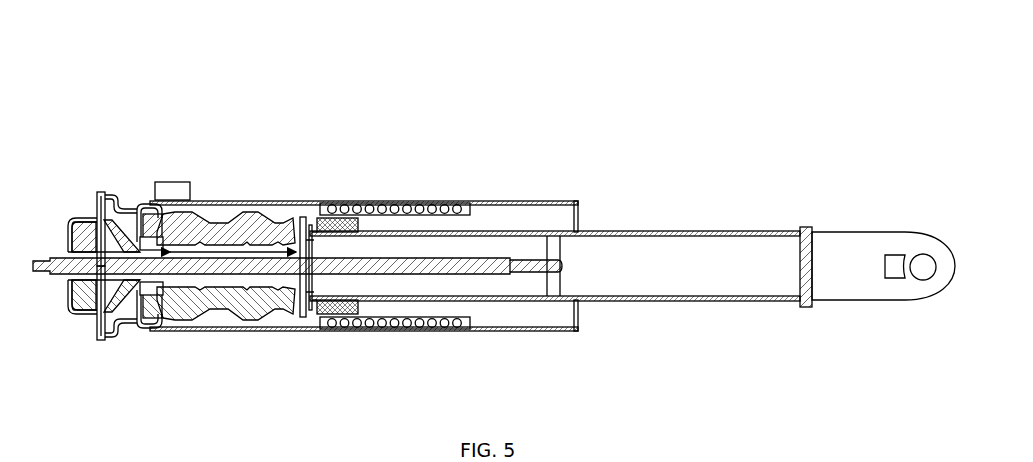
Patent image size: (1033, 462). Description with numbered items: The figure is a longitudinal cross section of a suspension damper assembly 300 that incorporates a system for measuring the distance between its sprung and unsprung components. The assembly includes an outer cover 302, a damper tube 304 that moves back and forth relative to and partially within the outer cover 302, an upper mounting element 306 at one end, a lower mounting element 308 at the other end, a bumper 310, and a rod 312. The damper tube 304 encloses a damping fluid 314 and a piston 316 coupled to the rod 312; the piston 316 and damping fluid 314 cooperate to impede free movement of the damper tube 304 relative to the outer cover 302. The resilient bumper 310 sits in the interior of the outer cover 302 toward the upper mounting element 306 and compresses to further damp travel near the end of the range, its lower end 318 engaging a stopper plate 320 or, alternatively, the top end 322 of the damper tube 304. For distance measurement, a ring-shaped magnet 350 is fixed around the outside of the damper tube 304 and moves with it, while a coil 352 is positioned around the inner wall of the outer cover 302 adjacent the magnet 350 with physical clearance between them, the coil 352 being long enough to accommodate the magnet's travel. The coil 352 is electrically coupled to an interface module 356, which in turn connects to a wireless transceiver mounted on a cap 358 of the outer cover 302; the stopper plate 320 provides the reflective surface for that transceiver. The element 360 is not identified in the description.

The damper assembly 300 is at (542, 119).
The outer cover 302 is at (538, 202).
The damper tube 304 is at (663, 231).
The upper mounting element 306 is at (97, 201).
The lower mounting element 308 is at (864, 232).
The bumper 310 is at (212, 321).
The rod 312 is at (490, 274).
The damping fluid 314 is at (685, 281).
The piston 316 is at (562, 268).
The lower end 318 is at (300, 317).
The stopper plate 320 is at (301, 222).
The top end 322 is at (314, 245).
The magnet 350 is at (357, 225).
The coil 352 is at (437, 217).
The interface module 356 is at (174, 182).
The cap 358 is at (152, 214).
The upper elastomeric bellows 360 is at (222, 250).